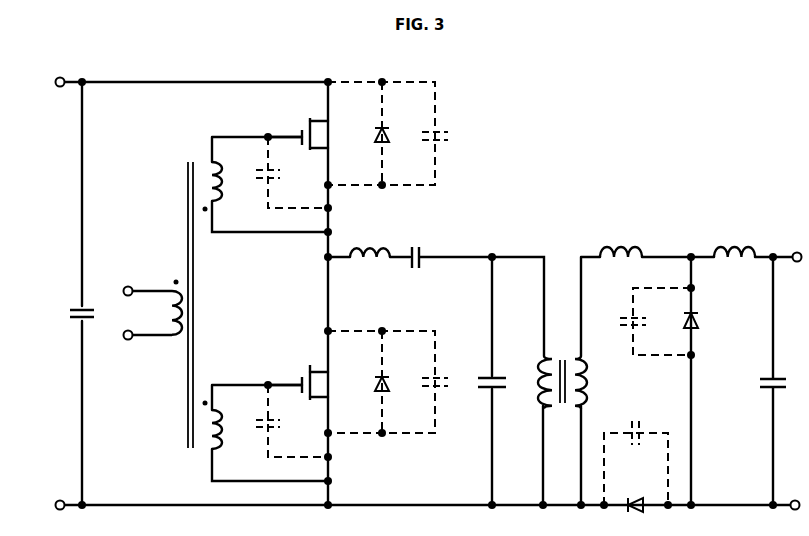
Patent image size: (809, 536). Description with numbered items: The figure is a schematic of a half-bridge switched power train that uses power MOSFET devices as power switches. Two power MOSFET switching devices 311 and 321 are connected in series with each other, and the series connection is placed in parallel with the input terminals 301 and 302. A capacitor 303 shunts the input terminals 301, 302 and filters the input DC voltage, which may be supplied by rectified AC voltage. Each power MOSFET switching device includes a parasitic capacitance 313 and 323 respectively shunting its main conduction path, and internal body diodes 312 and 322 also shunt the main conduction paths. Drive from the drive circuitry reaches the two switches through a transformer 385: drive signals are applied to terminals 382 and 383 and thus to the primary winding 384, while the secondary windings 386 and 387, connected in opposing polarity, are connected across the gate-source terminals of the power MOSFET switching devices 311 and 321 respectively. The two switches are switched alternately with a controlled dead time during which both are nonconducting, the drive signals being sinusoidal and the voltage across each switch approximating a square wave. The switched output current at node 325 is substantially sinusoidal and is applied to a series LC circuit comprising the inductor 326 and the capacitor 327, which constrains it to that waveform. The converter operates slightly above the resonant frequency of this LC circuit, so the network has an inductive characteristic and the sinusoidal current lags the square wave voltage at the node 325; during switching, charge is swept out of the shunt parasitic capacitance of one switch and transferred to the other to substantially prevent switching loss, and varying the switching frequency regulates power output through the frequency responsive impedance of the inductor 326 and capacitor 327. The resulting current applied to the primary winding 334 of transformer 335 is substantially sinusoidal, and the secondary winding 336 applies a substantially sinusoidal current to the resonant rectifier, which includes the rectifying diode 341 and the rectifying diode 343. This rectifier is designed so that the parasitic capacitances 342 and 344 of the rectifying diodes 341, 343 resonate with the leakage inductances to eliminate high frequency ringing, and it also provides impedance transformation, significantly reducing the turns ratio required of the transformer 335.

The input terminal 301 is at (59, 71).
The input terminal 302 is at (59, 495).
The capacitor 303 is at (65, 316).
The power MOSFET switching device 311 is at (315, 134).
The internal body diode 312 is at (398, 148).
The parasitic capacitance 313 is at (451, 135).
The power MOSFET switching device 321 is at (315, 382).
The internal body diode 322 is at (390, 384).
The parasitic capacitance 323 is at (419, 378).
The node 325 is at (328, 257).
The inductor 326 is at (370, 242).
The capacitor 327 is at (414, 248).
The primary winding 334 is at (533, 384).
The transformer 335 is at (583, 244).
The secondary winding 336 is at (601, 382).
The rectifying diode 341 is at (709, 322).
The parasitic capacitance 342 is at (616, 322).
The rectifying diode 343 is at (634, 496).
The parasitic capacitance 344 is at (634, 423).
The terminal 382 is at (143, 283).
The terminal 383 is at (143, 347).
The primary winding 384 is at (157, 313).
The transformer 385 is at (206, 155).
The secondary winding 386 is at (226, 180).
The secondary winding 387 is at (226, 430).